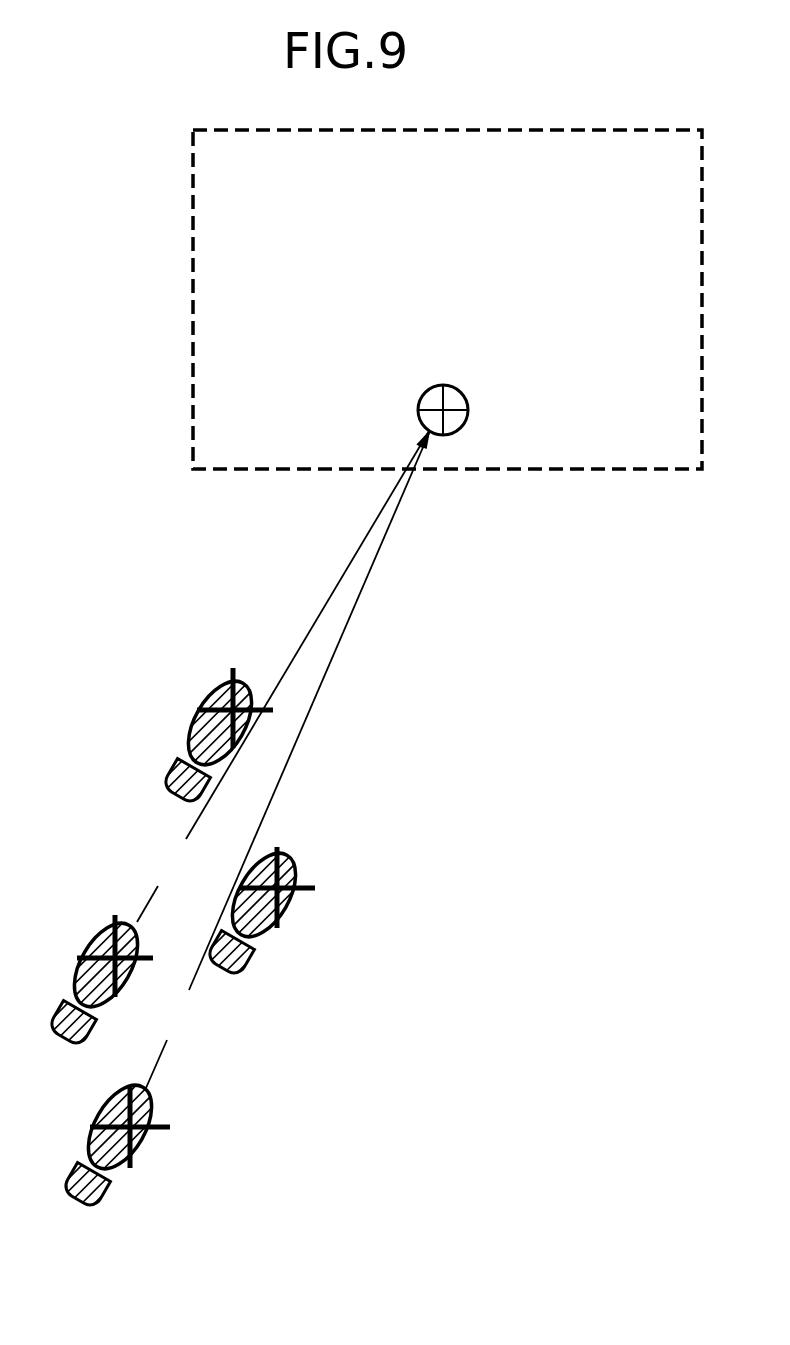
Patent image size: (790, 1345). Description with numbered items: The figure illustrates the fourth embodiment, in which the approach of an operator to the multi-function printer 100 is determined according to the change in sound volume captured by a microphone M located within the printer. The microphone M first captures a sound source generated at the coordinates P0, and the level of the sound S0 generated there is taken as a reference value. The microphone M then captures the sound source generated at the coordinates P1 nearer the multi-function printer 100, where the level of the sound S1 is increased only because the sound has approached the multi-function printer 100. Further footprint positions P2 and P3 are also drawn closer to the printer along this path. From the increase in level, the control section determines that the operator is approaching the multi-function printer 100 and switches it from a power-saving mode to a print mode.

The multi-function printer 100 is at (447, 299).
The microphone M is at (464, 408).
The coordinates P0 is at (106, 1141).
The coordinates P1 is at (99, 979).
The user position (footprint) P2 is at (250, 909).
The user position (footprint) P3 is at (206, 737).
The sound S0 is at (288, 759).
The sound S1 is at (283, 676).